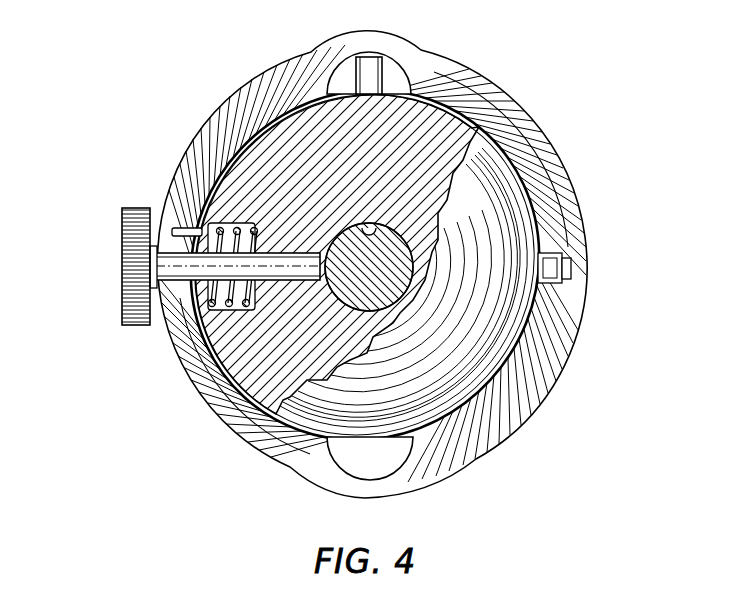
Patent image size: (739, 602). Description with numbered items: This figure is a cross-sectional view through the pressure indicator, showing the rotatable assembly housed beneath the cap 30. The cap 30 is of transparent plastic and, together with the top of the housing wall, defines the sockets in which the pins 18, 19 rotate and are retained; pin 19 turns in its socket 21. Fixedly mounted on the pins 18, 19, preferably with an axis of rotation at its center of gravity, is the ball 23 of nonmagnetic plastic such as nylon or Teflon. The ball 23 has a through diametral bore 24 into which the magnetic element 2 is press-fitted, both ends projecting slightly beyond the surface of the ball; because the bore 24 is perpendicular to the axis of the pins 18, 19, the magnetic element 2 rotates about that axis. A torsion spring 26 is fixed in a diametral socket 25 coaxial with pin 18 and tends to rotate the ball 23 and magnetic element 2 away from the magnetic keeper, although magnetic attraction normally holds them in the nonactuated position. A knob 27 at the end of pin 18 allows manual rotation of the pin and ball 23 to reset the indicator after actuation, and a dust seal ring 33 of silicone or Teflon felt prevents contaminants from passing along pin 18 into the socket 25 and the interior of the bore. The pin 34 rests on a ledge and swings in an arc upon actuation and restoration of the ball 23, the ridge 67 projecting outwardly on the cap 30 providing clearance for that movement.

The rotatable magnetic element 2 is at (341, 286).
The pin 18 is at (295, 256).
The pin 19 is at (560, 260).
The socket 21 is at (568, 274).
The ball 23 is at (480, 284).
The diametral bore 24 is at (369, 232).
The diametral socket 25 is at (232, 308).
The torsion spring 26 is at (236, 226).
The knob 27 is at (126, 231).
The cap 30 is at (206, 135).
The dust seal ring 33 is at (153, 248).
The pin 34 is at (363, 68).
The ridge 67 is at (386, 44).